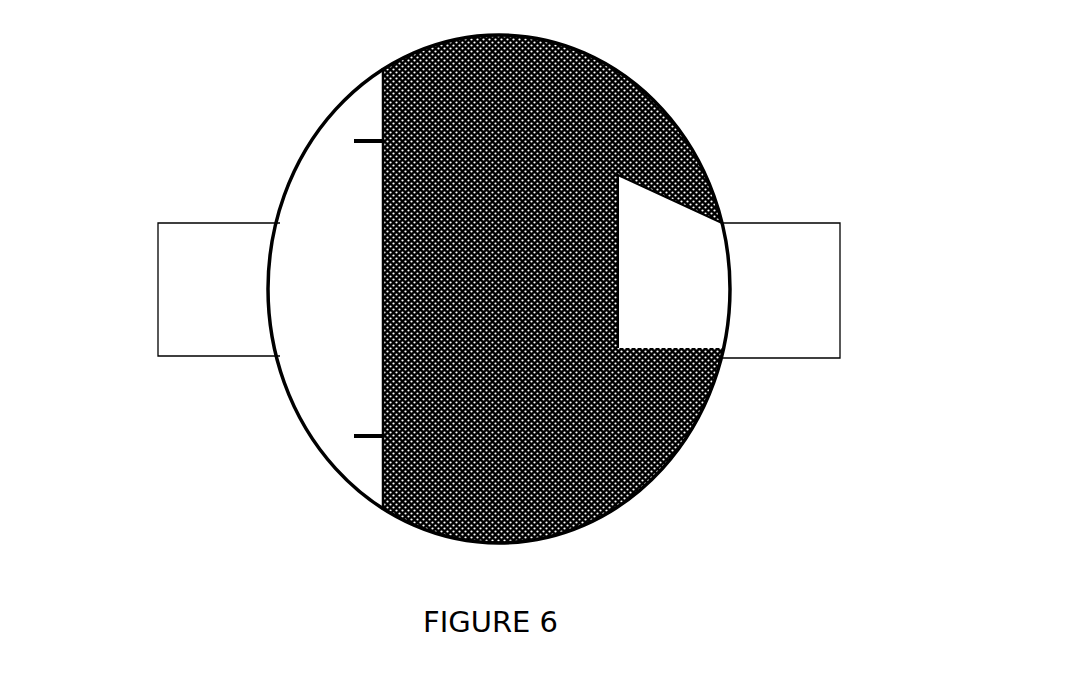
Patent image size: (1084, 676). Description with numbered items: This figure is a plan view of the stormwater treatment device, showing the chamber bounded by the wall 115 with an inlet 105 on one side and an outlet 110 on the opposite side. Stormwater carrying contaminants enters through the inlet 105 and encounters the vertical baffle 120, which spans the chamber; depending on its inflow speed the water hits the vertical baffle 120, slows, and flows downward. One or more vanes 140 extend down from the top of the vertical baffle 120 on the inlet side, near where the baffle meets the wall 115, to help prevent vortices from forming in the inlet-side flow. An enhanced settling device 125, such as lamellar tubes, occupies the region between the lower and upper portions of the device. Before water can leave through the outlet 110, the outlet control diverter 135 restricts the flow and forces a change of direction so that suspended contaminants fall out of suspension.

The inlet 105 is at (149, 349).
The outlet 110 is at (832, 351).
The wall 115 is at (678, 128).
The vertical baffle 120 is at (375, 355).
The enhanced settling device 125 is at (533, 528).
The outlet control diverter 135 is at (627, 204).
The vanes 140 is at (347, 131).